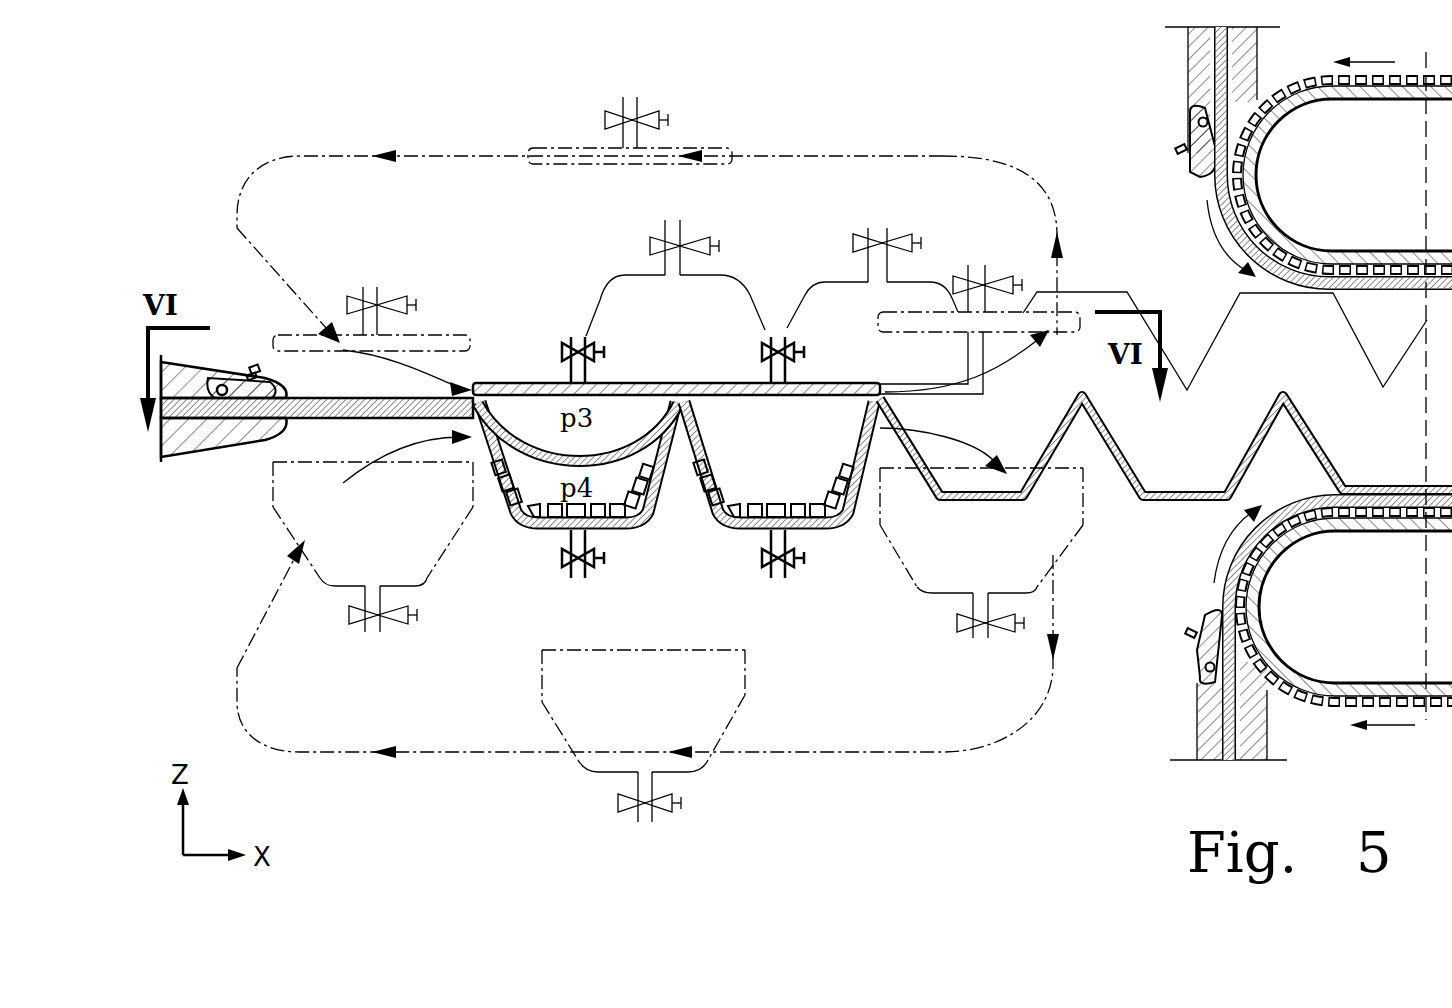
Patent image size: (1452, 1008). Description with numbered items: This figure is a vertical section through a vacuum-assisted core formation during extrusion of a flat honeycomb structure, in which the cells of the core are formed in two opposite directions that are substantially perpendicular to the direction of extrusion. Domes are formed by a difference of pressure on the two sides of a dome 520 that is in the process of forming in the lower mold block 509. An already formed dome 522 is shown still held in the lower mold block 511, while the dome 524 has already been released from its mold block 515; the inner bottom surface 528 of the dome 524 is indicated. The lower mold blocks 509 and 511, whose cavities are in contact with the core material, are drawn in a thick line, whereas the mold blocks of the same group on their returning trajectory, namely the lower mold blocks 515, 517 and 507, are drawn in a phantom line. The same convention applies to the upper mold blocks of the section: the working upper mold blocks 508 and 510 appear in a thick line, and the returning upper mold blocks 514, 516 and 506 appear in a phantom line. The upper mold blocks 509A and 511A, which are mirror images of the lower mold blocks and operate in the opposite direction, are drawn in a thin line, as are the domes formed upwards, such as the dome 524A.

The upper mold block 506 is at (433, 333).
The lower mold block 507 is at (330, 588).
The upper mold block 508 is at (510, 383).
The lower mold block 509 is at (540, 533).
The upper mold block 509A is at (675, 256).
The upper mold block 510 is at (720, 384).
The lower mold block 511 is at (720, 533).
The upper mold block 511A is at (850, 278).
The upper mold block 514 is at (937, 317).
The lower mold block 515 is at (1063, 553).
The upper mold block 516 is at (585, 150).
The lower mold block 517 is at (542, 700).
The dome 520 is at (620, 535).
The dome 522 is at (822, 522).
The dome 524 is at (1058, 463).
The dome 524A is at (1062, 300).
The inner bottom surface 528 is at (943, 567).